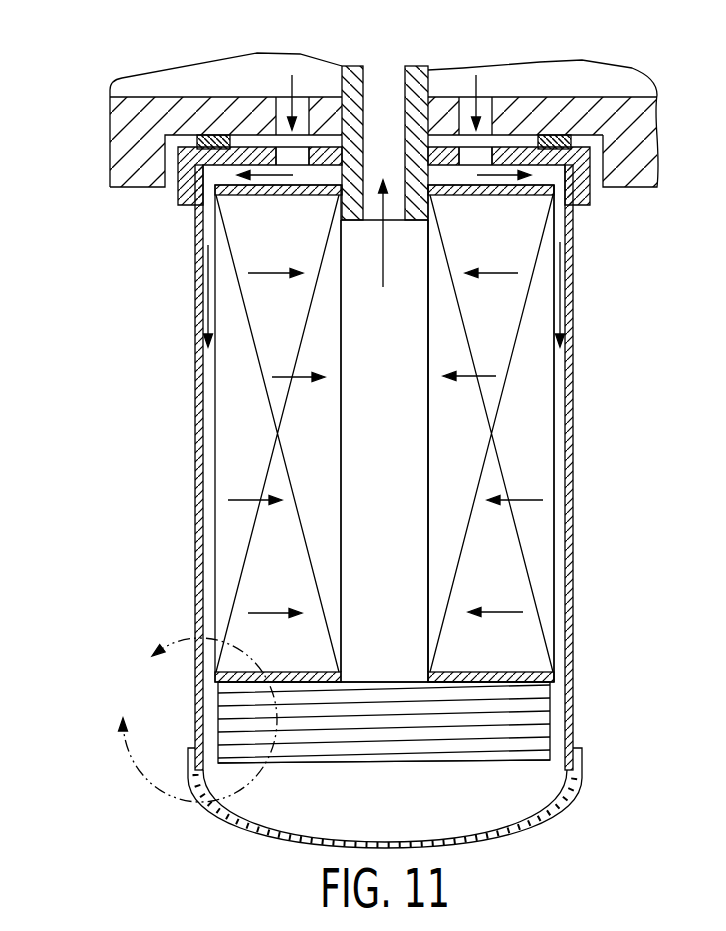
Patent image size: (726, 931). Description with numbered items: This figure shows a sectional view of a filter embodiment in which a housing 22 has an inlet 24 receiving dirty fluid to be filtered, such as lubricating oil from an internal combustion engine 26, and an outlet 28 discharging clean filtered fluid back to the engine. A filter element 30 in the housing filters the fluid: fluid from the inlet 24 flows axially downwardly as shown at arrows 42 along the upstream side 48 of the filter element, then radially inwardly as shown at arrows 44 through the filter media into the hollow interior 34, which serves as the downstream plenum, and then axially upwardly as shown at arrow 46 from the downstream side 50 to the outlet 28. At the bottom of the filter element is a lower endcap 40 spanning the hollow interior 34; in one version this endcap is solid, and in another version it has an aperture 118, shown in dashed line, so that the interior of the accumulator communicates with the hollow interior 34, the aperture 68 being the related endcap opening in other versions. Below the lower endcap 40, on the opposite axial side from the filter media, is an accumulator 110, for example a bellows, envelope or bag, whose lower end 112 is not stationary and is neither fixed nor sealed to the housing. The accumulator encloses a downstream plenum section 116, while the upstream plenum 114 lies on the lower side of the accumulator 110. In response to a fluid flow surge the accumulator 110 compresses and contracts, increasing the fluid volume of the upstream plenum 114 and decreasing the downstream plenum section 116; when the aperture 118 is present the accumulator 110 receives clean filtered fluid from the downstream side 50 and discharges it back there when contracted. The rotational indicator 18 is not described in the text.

The direction of rotation 18 is at (187, 720).
The housing 22 is at (194, 366).
The inlet 24 is at (483, 102).
The internal combustion engine 26 is at (620, 84).
The outlet 28 is at (382, 85).
The filter element 30 is at (215, 418).
The hollow interior 34 is at (400, 482).
The lower endcap 40 is at (495, 673).
The arrows (upstream flow path) 42 is at (571, 312).
The arrows (radially inward flow) 44 is at (497, 276).
The arrow (downstream flow path) 46 is at (383, 273).
The upstream side 48 is at (556, 407).
The downstream side 50 is at (437, 420).
The aperture 68 is at (335, 662).
The accumulator 110 is at (527, 720).
The lower end 112 is at (457, 762).
The upstream plenum 114 is at (277, 822).
The downstream plenum section 116 is at (366, 693).
The aperture 118 is at (427, 676).